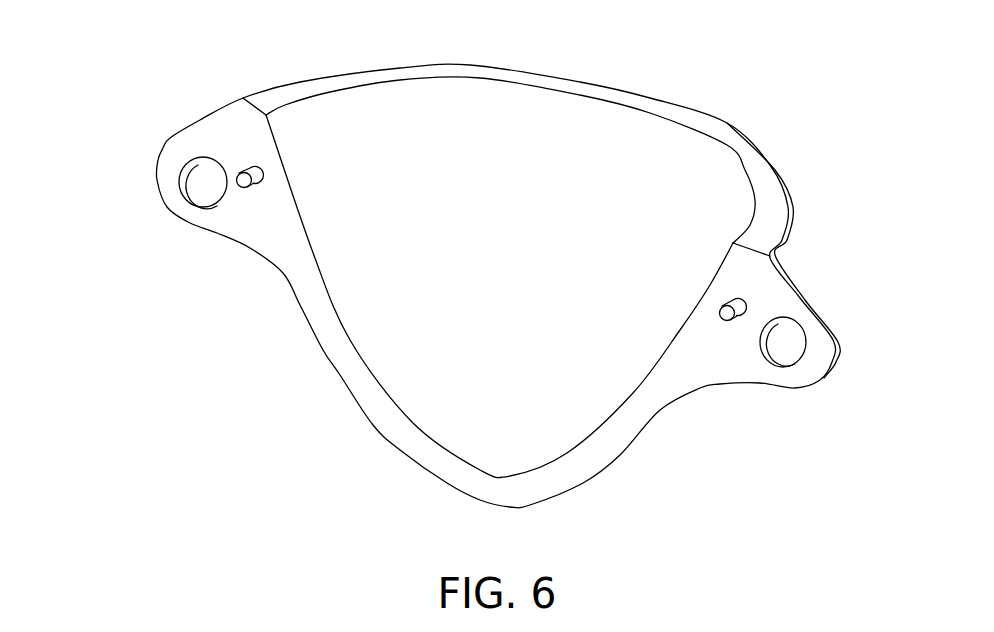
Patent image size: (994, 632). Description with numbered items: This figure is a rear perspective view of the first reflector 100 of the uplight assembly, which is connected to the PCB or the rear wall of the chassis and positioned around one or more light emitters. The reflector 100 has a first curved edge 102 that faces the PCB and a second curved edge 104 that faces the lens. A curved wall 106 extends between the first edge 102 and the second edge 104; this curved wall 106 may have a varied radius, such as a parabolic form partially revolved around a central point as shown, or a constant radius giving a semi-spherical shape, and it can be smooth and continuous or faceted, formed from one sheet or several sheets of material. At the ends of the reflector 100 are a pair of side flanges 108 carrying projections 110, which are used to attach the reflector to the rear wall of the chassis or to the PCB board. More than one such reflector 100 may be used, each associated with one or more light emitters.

The reflector 100 is at (893, 150).
The first curved edge 102 is at (372, 428).
The second curved edge 104 is at (578, 82).
The curved wall 106 is at (542, 368).
The side flanges 108 is at (180, 153).
The projections 110 is at (247, 167).